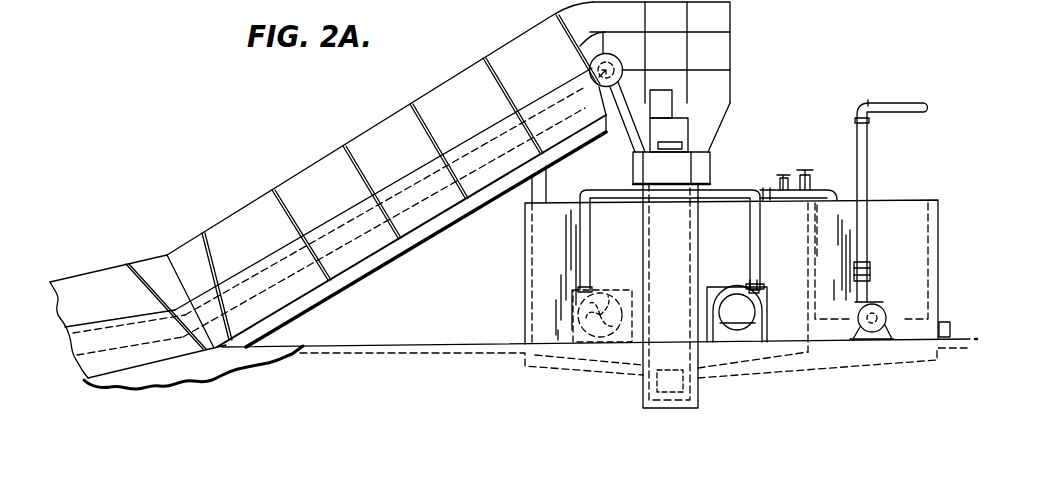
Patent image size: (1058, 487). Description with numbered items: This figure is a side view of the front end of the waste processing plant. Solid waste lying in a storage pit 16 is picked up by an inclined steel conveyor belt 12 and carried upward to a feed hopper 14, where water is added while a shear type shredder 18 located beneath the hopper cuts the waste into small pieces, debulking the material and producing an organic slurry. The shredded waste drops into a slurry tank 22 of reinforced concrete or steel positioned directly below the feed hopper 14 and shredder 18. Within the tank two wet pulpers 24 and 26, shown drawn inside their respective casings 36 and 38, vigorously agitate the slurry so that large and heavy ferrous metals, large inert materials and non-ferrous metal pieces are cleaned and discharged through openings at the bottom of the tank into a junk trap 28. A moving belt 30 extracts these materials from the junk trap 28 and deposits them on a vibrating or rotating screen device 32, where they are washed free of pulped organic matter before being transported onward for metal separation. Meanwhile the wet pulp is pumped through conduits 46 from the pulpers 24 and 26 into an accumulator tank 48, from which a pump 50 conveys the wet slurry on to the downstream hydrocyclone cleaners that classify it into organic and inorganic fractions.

The conveyor belt 12 is at (403, 193).
The feed hopper 14 is at (713, 85).
The storage pit 16 is at (52, 365).
The shredder 18 is at (698, 133).
The slurry tank 22 is at (717, 383).
The wet pulper 24 is at (614, 340).
The wet pulper 26 is at (738, 312).
The junk trap 28 is at (677, 400).
The moving belt 30 is at (667, 398).
The screen device 32 is at (463, 353).
The pump 36 is at (613, 350).
The pump casing 38 is at (748, 342).
The conduits 46 is at (615, 190).
The accumulator tank 48 is at (917, 258).
The pump 50 is at (883, 310).